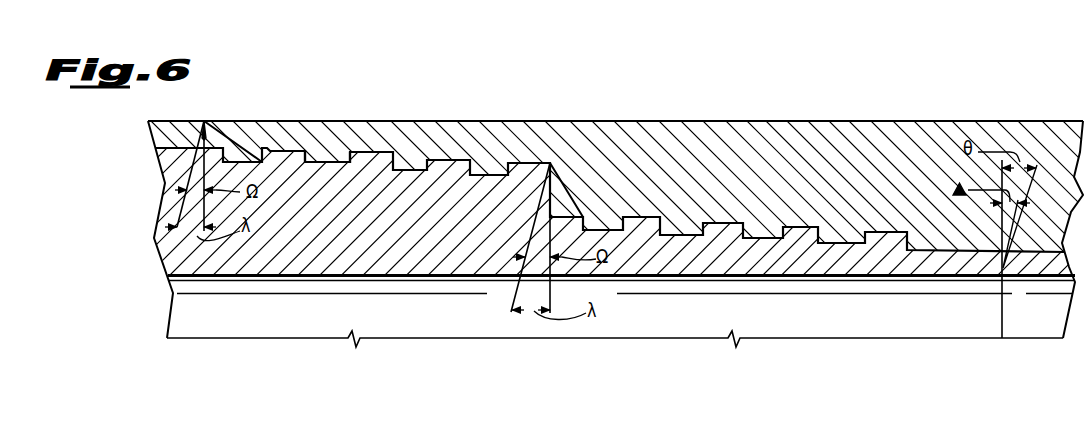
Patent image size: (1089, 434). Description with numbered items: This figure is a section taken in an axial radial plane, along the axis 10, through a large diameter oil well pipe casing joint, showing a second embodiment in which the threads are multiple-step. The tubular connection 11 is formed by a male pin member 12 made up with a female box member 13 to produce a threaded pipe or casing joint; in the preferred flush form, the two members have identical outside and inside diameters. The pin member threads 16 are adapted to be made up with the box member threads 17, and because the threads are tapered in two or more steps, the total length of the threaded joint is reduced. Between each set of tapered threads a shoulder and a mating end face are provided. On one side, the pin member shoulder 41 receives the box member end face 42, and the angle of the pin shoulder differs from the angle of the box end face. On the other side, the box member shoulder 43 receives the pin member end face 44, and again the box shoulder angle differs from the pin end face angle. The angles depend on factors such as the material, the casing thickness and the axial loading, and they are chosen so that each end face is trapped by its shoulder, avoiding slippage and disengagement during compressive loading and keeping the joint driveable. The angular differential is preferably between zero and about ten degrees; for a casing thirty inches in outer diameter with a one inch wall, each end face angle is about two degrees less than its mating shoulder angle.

The axis 10 is at (460, 333).
The tubular connection 11 is at (512, 116).
The pin member 12 is at (418, 266).
The box member 13 is at (435, 122).
The pin member threads 16 is at (372, 153).
The box member threads 17 is at (330, 142).
The pin member shoulder 41 is at (203, 135).
The box member end face 42 is at (206, 123).
The box member shoulder 43 is at (1010, 268).
The pin member end face 44 is at (1003, 262).